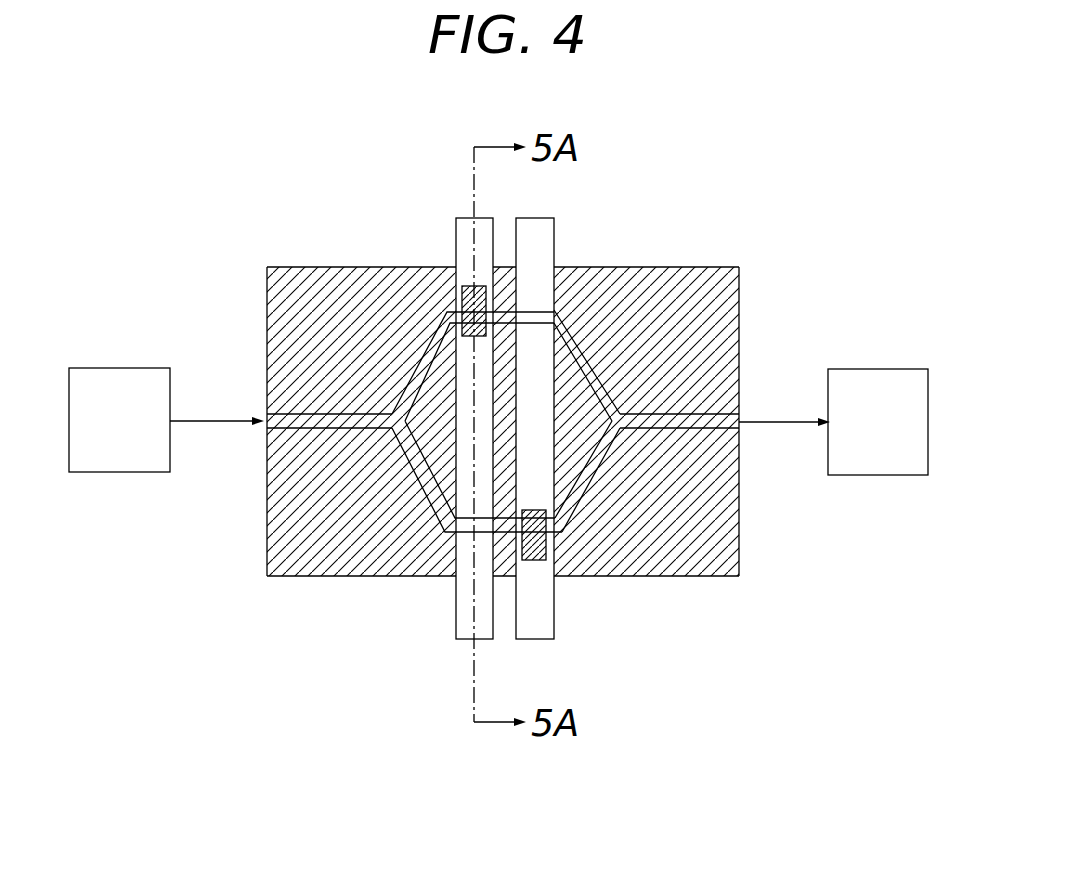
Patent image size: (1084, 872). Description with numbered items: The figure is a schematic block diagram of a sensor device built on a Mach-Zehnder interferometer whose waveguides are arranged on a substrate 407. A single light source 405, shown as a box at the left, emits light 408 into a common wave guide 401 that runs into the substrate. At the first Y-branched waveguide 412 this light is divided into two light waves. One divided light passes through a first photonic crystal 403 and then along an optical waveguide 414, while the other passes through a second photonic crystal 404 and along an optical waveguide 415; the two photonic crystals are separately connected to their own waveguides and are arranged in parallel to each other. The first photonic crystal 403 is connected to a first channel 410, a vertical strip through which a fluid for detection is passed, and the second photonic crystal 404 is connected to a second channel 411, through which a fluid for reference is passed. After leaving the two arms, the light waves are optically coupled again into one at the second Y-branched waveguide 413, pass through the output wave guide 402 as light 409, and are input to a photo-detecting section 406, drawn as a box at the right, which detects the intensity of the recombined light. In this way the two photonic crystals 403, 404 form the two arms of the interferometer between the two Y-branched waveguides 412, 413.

The common wave guide 401 is at (316, 422).
The wave guide 402 is at (680, 432).
The first photonic crystal 403 is at (463, 287).
The second photonic crystal 404 is at (531, 560).
The light source 405 is at (128, 368).
The photo-detecting section 406 is at (897, 369).
The substrate 407 is at (316, 290).
The light 408 is at (205, 423).
The light 409 is at (785, 425).
The first channel 410 is at (455, 625).
The second channel 411 is at (545, 245).
The first Y-branched waveguide 412 is at (395, 432).
The second Y-branched waveguide 413 is at (615, 422).
The optical waveguide 414 is at (578, 352).
The optical waveguide 415 is at (587, 478).